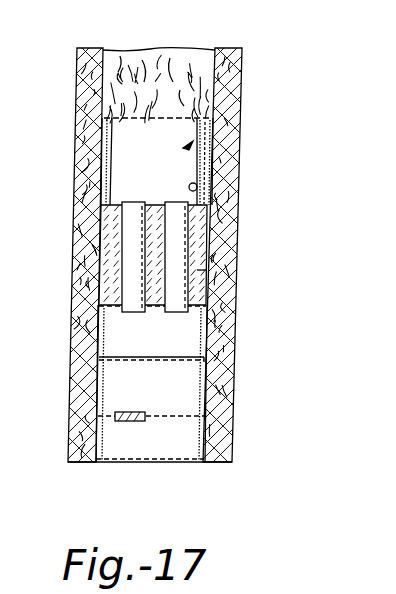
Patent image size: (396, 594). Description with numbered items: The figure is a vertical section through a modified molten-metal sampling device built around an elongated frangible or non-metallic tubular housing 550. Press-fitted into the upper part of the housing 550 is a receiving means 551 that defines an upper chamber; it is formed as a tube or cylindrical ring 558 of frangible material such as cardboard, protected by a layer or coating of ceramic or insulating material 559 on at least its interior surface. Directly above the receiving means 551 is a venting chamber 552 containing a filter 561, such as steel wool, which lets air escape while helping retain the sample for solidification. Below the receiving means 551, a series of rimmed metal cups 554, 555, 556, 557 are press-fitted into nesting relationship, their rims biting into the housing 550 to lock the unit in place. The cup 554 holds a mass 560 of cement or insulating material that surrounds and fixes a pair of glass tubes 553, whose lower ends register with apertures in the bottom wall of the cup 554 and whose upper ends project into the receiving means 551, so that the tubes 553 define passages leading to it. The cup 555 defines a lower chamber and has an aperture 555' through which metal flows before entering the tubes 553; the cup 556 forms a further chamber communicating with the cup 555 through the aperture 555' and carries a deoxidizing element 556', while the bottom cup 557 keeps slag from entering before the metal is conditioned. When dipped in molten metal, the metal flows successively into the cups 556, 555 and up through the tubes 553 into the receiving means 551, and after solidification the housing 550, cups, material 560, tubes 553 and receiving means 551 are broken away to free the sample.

The tubular housing 550 is at (239, 64).
The venting chamber 552 is at (170, 48).
The filter 561 is at (213, 83).
The receiving means 551 is at (198, 135).
The cylindrical ring 558 is at (203, 163).
The ceramic or insulating coating 559 is at (198, 188).
The rimmed cup 554 is at (203, 258).
The glass tubes 553 is at (170, 314).
The mass of cement or insulating material 560 is at (200, 275).
The rimmed cup 555 is at (246, 382).
The aperture 555' is at (151, 377).
The rimmed cup 556 is at (248, 365).
The deoxidizing element 556' is at (151, 432).
The bottom cup 557 is at (218, 436).